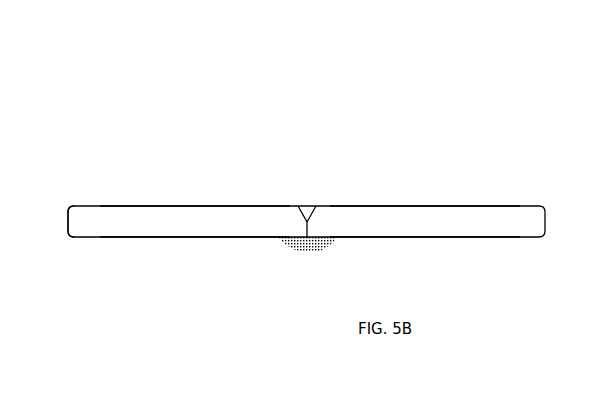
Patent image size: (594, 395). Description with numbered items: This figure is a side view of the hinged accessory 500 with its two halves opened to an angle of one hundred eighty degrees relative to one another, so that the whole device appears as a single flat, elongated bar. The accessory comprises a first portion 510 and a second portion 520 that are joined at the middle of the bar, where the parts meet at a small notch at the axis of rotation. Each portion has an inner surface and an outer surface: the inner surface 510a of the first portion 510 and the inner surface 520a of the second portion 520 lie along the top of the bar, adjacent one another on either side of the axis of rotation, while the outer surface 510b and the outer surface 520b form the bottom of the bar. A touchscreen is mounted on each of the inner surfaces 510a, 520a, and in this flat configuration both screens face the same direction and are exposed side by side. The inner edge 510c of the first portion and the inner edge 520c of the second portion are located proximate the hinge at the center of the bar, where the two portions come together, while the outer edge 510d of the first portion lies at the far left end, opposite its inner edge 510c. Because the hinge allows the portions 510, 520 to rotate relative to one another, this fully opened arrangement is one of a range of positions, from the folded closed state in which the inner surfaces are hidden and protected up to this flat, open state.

The hinged accessory 500 is at (405, 85).
The first portion 510 is at (187, 246).
The inner surface of the first portion 510a is at (195, 182).
The outer surface of the first portion 510b is at (185, 262).
The inner edge of the first portion 510c is at (274, 203).
The outer edge of the first portion 510d is at (43, 191).
The second portion 520 is at (426, 246).
The inner surface of the second portion 520a is at (425, 182).
The outer surface of the second portion 520b is at (436, 255).
The inner edge of the second portion 520c is at (334, 194).